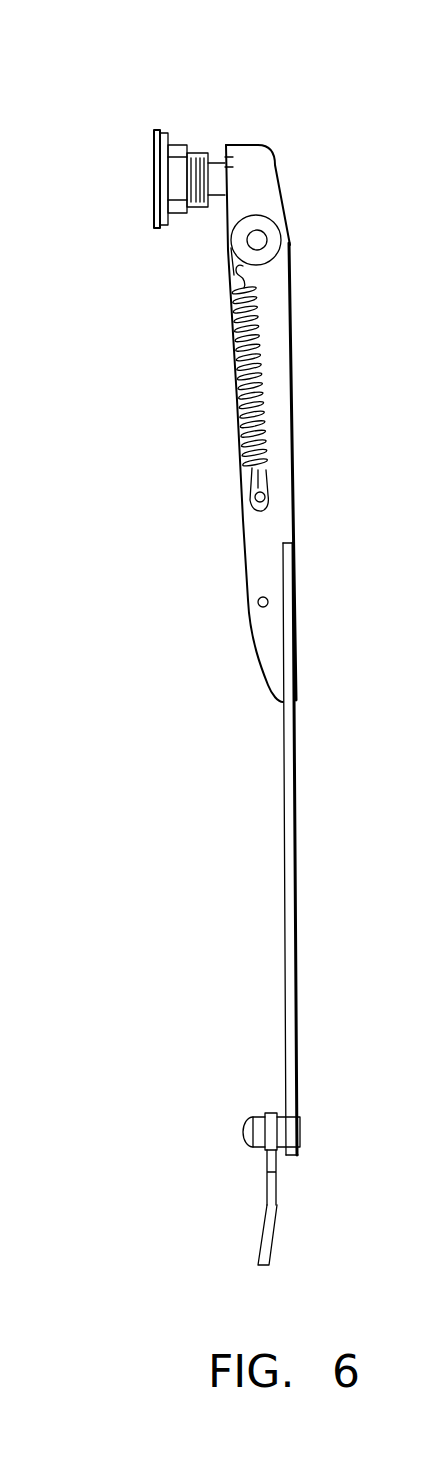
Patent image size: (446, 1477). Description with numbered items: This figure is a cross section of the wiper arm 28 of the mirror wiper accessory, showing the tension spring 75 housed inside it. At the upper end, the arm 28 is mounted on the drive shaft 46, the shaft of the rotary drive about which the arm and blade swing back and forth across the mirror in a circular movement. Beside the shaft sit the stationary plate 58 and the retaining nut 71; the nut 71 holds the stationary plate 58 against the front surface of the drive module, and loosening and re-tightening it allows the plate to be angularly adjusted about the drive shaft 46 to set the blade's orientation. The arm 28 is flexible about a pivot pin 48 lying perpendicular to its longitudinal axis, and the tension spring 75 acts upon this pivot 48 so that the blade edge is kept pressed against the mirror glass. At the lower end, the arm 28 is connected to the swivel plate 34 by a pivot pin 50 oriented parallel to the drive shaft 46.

The wiper arm 28 is at (296, 385).
The swivel plate 34 is at (263, 1218).
The drive shaft 46 is at (216, 150).
The pivot pin 48 is at (262, 240).
The pivot pin 50 is at (243, 1135).
The stationary plate 58 is at (155, 148).
The retaining nut 71 is at (178, 148).
The tension spring 75 is at (232, 362).